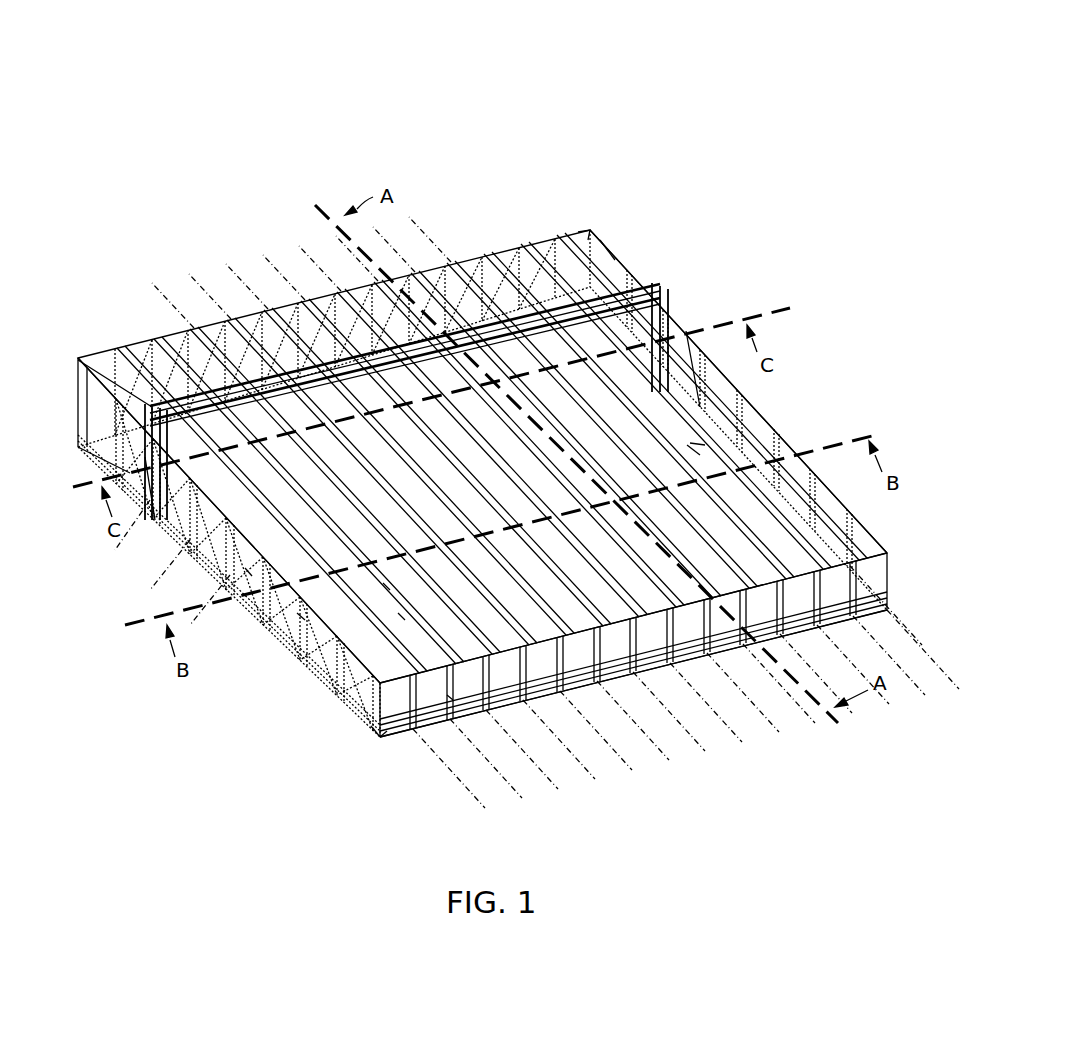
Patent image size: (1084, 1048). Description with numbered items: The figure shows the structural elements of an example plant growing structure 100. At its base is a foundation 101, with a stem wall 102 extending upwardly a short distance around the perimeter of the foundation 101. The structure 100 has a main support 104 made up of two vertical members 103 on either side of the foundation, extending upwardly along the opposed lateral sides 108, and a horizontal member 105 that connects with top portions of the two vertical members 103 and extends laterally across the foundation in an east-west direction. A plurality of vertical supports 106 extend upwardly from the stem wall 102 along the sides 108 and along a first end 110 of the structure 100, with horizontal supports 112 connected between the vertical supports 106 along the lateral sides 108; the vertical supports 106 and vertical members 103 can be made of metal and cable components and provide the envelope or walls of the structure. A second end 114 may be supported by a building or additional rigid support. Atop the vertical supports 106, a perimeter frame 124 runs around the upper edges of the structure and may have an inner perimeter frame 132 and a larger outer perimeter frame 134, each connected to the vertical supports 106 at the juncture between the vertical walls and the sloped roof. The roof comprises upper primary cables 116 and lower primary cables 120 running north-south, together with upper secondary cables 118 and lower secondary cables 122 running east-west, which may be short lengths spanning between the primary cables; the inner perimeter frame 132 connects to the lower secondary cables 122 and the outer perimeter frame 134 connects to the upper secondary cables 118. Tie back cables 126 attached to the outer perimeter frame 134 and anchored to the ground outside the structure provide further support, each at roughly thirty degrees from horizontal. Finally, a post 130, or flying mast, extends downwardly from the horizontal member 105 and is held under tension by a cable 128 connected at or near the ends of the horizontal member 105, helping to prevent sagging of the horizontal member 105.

The plant growing structure 100 is at (637, 92).
The foundation 101 is at (384, 735).
The stem wall 102 is at (372, 727).
The vertical members 103 is at (686, 331).
The main support 104 is at (795, 267).
The horizontal member 105 is at (290, 366).
The vertical supports 106 is at (297, 613).
The sides 108 is at (787, 366).
The first end 110 is at (725, 686).
The horizontal supports 112 is at (245, 568).
The second end 114 is at (160, 322).
The upper primary cables 116 is at (383, 583).
The upper secondary cables 118 is at (687, 445).
The lower primary cables 120 is at (398, 613).
The lower secondary cables 122 is at (690, 443).
The perimeter frame 124 is at (643, 262).
The tie back cables 126 is at (140, 555).
The cable 128 is at (497, 365).
The post 130 is at (408, 400).
The inner perimeter frame 132 is at (607, 253).
The outer perimeter frame 134 is at (578, 232).